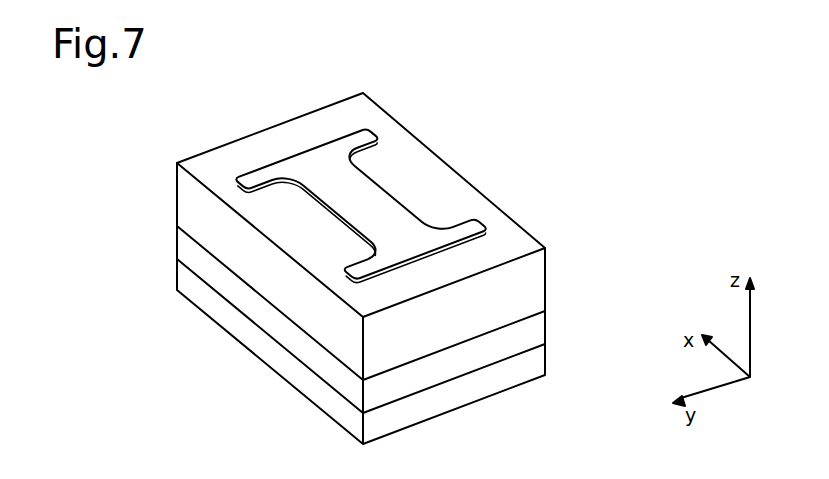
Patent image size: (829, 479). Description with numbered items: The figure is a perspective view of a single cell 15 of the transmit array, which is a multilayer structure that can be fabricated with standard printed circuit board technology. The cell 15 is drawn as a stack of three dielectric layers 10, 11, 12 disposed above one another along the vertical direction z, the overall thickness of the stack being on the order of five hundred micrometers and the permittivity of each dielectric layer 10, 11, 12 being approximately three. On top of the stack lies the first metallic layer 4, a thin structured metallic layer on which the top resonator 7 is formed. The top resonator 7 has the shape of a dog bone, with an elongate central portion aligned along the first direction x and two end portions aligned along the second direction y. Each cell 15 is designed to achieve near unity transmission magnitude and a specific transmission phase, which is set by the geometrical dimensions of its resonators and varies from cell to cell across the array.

The first metallic layer 4 is at (372, 193).
The top resonator 7 is at (366, 205).
The first dielectric layer 10 is at (395, 236).
The second dielectric layer 11 is at (530, 327).
The third dielectric layer 12 is at (533, 368).
The cell 15 is at (405, 268).